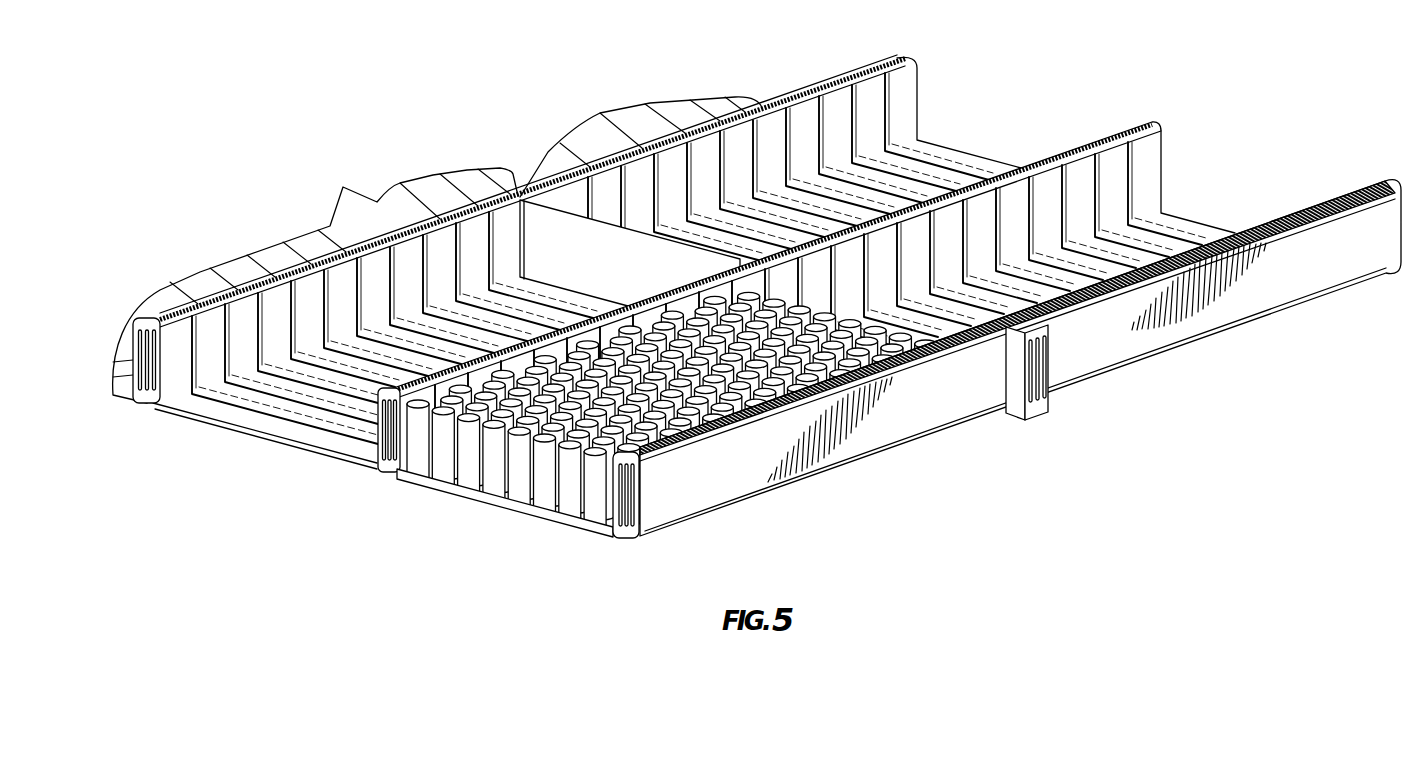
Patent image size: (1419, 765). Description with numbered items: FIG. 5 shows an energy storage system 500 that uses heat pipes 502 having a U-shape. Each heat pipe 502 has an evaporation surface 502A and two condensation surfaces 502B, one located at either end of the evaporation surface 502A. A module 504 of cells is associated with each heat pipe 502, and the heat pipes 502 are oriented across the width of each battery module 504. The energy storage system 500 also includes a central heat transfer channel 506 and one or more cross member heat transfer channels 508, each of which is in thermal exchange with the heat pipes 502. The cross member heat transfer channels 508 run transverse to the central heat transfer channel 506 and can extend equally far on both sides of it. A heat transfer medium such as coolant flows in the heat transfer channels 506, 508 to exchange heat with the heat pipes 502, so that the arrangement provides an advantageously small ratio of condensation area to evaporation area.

The energy storage system 500 is at (757, 354).
The heat pipe 502 is at (757, 314).
The evaporation surface 502A is at (259, 420).
The condensation surface 502B is at (886, 342).
The module of cells 504 is at (470, 463).
The central heat transfer channel 506 is at (1050, 363).
The cross member heat transfer channel 508 is at (522, 328).